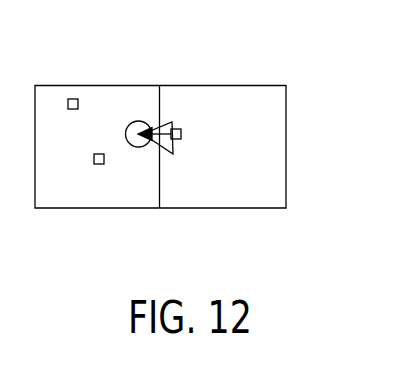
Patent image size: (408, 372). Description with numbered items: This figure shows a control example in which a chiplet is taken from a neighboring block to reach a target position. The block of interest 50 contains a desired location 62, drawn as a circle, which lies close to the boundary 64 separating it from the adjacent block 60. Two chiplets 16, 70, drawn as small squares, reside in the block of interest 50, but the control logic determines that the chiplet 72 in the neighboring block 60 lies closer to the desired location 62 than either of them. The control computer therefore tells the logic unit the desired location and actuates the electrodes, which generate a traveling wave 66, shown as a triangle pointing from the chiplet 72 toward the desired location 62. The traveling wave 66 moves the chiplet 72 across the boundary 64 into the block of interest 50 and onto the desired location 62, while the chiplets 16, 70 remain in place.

The block of interest 50 is at (39, 85).
The adjacent block 60 is at (287, 85).
The boundary 64 is at (160, 86).
The desired location 62 is at (138, 121).
The traveling wave 66 is at (168, 124).
The chiplet 70 is at (75, 98).
The chiplet 72 is at (182, 134).
The chiplet 16 is at (99, 164).